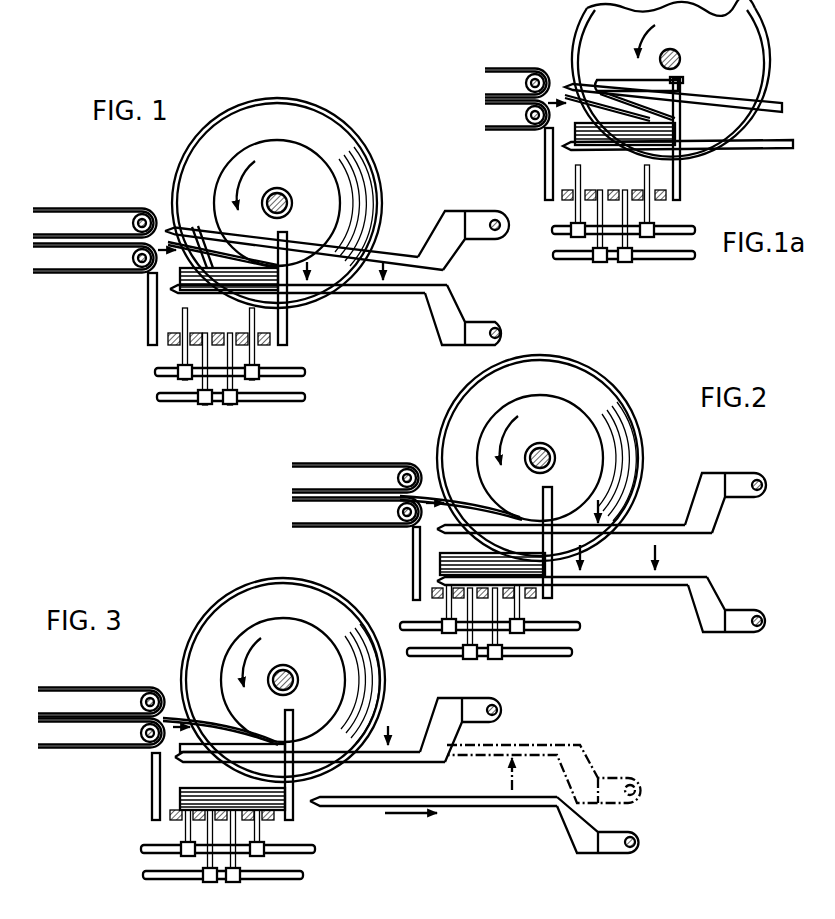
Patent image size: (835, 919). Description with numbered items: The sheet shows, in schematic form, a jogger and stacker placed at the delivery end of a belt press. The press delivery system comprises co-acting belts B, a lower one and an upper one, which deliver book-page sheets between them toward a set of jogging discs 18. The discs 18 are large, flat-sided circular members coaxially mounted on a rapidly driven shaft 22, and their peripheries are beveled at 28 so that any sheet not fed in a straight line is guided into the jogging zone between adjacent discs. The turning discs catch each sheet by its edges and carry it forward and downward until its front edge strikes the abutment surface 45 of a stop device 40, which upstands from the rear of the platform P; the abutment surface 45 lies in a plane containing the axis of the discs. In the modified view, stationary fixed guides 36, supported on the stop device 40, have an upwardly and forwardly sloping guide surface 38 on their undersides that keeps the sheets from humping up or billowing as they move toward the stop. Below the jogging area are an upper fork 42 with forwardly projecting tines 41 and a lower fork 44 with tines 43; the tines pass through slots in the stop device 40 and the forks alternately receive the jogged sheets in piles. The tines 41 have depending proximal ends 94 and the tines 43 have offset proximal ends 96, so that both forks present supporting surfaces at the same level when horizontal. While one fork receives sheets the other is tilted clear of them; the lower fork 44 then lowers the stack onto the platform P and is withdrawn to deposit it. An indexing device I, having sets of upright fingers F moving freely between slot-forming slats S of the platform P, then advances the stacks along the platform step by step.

In FIG. 1, the jogging discs 18 is at (345, 126).
In FIG. 1a, the jogging discs 18 is at (578, 16).
In FIG. 2, the jogging discs 18 is at (642, 426).
In FIG. 3, the jogging discs 18 is at (200, 626).
In FIG. 1, the shaft 22 is at (284, 199).
In FIG. 1a, the shaft 22 is at (683, 57).
In FIG. 2, the shaft 22 is at (550, 452).
In FIG. 3, the shaft 22 is at (292, 671).
In FIG. 1, the peripheral bevel 28 is at (182, 161).
In FIG. 1a, the fixed guides 36 is at (617, 80).
In FIG. 1a, the guide surface 38 is at (655, 120).
In FIG. 1, the stop device 40 is at (284, 258).
In FIG. 1a, the stop device 40 is at (683, 92).
In FIG. 2, the stop device 40 is at (541, 498).
In FIG. 3, the stop device 40 is at (294, 714).
In FIG. 1, the tines or blades of upper fork 41 is at (190, 230).
In FIG. 2, the tines or blades of upper fork 41 is at (440, 528).
In FIG. 3, the tines or blades of upper fork 41 is at (183, 758).
In FIG. 1, the upper fork 42 is at (450, 206).
In FIG. 2, the upper fork 42 is at (713, 471).
In FIG. 3, the upper fork 42 is at (449, 696).
In FIG. 1, the tines or blades of lower fork 43 is at (176, 290).
In FIG. 2, the tines or blades of lower fork 43 is at (440, 581).
In FIG. 3, the tines or blades of lower fork 43 is at (368, 804).
In FIG. 1, the lower fork 44 is at (432, 330).
In FIG. 2, the lower fork 44 is at (712, 634).
In FIG. 3, the lower fork 44 is at (565, 838).
In FIG. 1, the abutment surface 45 is at (248, 292).
In FIG. 2, the abutment surface 45 is at (543, 541).
In FIG. 3, the abutment surface 45 is at (257, 768).
In FIG. 1, the depending proximal ends 94 is at (455, 233).
In FIG. 3, the depending proximal ends 94 is at (433, 716).
In FIG. 1, the offset proximal ends 96 is at (450, 303).
In FIG. 3, the offset proximal ends 96 is at (570, 816).
In FIG. 1, the slats S is at (168, 337).
In FIG. 1a, the slats S is at (662, 190).
In FIG. 2, the slats S is at (433, 602).
In FIG. 3, the slats S is at (270, 821).
In FIG. 1, the upright fingers F is at (185, 352).
In FIG. 1a, the upright fingers F is at (650, 208).
In FIG. 2, the upright fingers F is at (520, 604).
In FIG. 3, the upright fingers F is at (207, 830).
In FIG. 1, the platform P is at (268, 330).
In FIG. 1, the indexing device I is at (168, 414).
In FIG. 1a, the indexing device I is at (593, 268).
In FIG. 2, the indexing device I is at (560, 664).
In FIG. 3, the indexing device I is at (162, 888).
In FIG. 2, the belts B is at (355, 529).